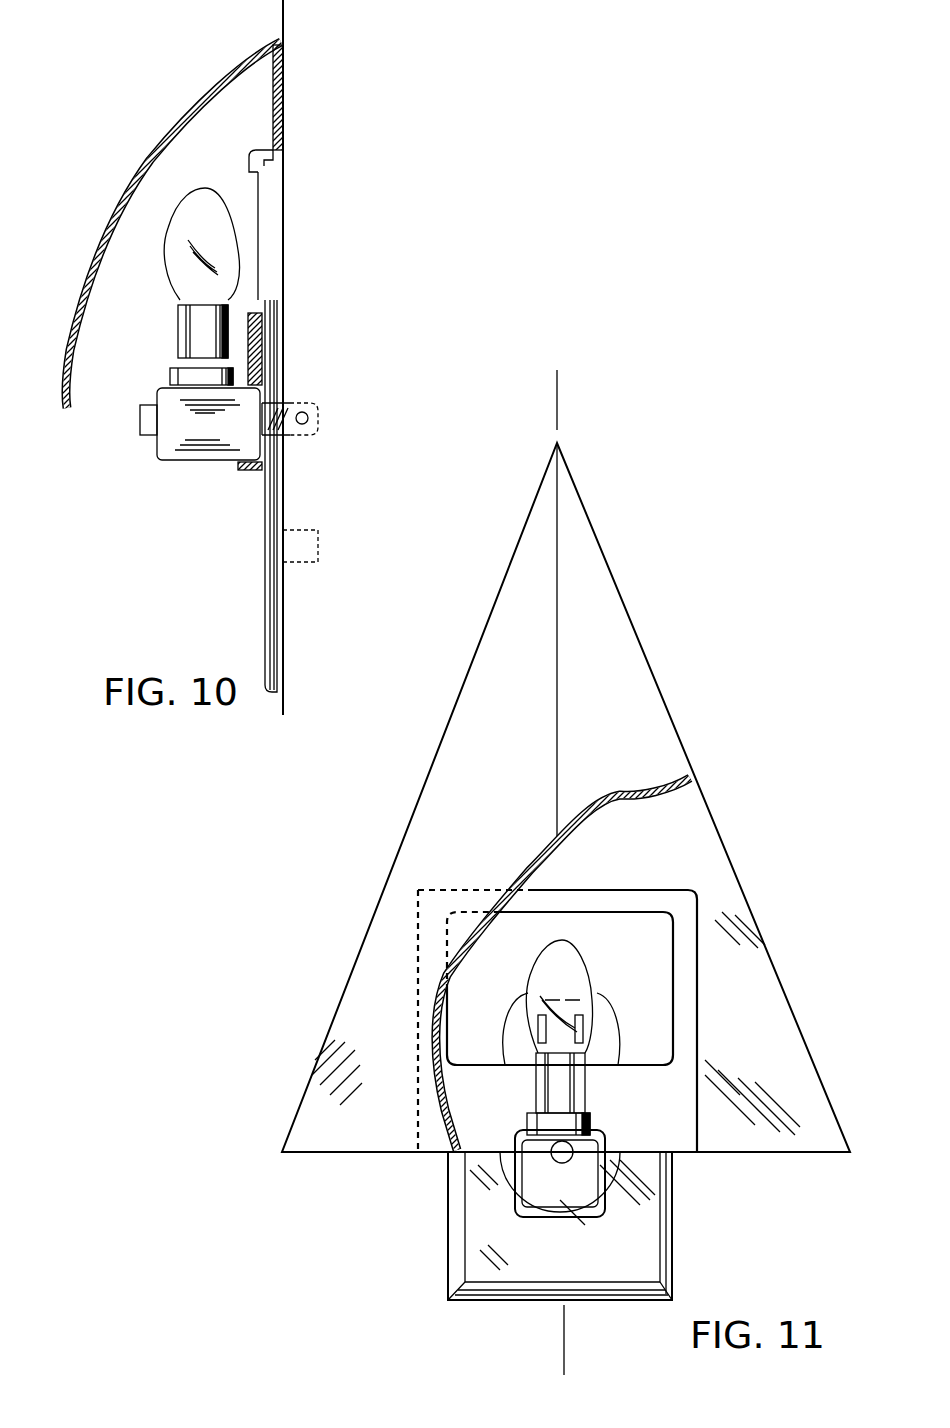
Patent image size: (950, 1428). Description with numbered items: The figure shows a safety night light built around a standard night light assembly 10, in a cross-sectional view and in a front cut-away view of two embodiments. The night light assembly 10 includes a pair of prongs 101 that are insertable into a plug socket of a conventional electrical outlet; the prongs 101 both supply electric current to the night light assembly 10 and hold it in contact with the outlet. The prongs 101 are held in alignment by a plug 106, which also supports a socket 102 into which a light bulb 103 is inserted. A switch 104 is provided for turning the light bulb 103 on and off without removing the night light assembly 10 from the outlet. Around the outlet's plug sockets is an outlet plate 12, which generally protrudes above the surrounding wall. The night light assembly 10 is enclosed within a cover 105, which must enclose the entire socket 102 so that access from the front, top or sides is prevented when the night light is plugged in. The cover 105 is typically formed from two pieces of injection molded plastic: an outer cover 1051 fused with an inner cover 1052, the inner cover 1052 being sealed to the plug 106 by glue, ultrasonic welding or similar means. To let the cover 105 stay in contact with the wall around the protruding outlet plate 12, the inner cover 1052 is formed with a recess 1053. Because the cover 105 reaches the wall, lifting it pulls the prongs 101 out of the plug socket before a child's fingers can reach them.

In FIG. 10, the night light assembly 10 is at (138, 499).
In FIG. 10, the outlet plate 12 is at (276, 322).
In FIG. 11, the outlet plate 12 is at (575, 383).
In FIG. 10, the prongs 101 is at (305, 403).
In FIG. 10, the socket 102 is at (200, 327).
In FIG. 11, the socket 102 is at (585, 1122).
In FIG. 11, the light bulb 103 is at (562, 955).
In FIG. 10, the switch 104 is at (152, 420).
In FIG. 11, the switch 104 is at (566, 1156).
In FIG. 10, the cover 105 is at (213, 82).
In FIG. 11, the cover 105 is at (485, 728).
In FIG. 10, the plug 106 is at (222, 422).
In FIG. 11, the plug 106 is at (520, 1190).
In FIG. 10, the outer cover 1051 is at (281, 32).
In FIG. 11, the outer cover 1051 is at (650, 732).
In FIG. 10, the inner cover 1052 is at (284, 125).
In FIG. 11, the inner cover 1052 is at (785, 1145).
In FIG. 10, the recess 1053 is at (269, 213).